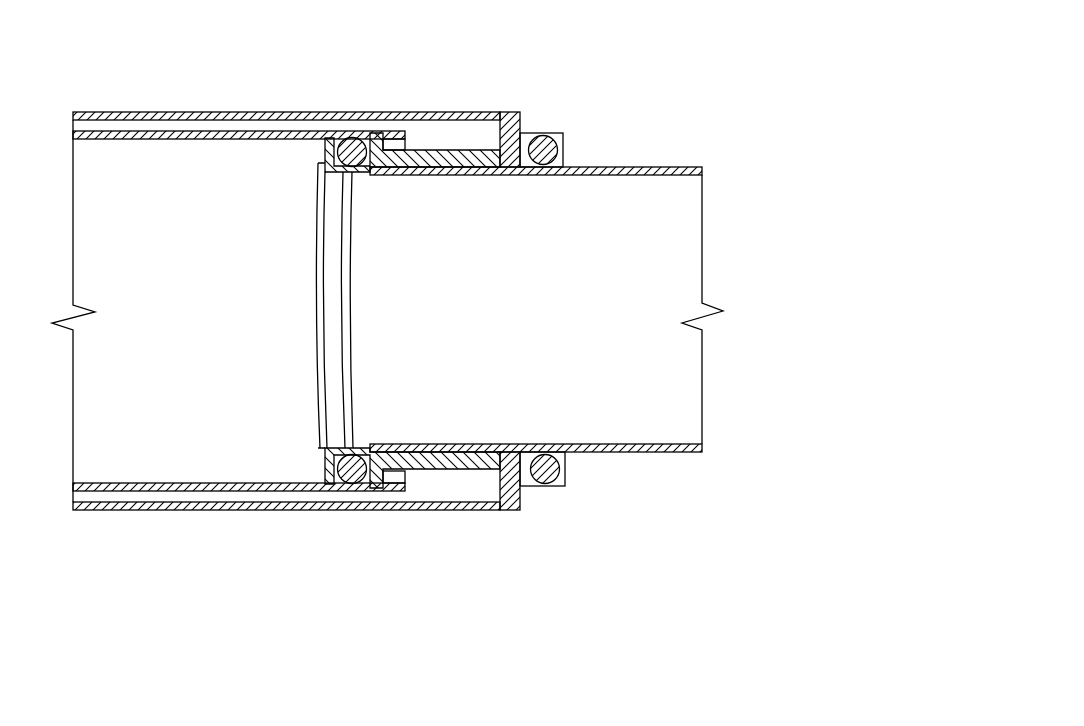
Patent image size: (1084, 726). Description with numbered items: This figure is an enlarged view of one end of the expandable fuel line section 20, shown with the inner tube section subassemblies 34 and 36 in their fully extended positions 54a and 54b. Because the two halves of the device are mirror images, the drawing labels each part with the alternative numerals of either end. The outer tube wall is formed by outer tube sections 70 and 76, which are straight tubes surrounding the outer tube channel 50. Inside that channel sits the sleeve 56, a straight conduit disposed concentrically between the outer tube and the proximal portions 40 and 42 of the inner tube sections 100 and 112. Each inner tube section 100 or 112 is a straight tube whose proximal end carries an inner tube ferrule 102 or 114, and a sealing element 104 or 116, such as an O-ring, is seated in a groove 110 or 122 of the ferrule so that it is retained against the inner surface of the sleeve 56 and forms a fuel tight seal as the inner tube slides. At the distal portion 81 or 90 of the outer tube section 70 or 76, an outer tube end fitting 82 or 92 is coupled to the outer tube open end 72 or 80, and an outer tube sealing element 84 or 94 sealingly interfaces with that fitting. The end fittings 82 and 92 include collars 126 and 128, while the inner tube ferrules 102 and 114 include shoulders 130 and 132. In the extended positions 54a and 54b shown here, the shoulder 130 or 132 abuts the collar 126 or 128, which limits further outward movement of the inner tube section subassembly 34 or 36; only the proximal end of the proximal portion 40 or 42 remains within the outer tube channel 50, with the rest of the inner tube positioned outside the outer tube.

The expandable fuel line section 20 is at (150, 55).
The outer tube channel 50 is at (227, 150).
The sleeve 56 is at (290, 134).
The shoulder 130 is at (397, 307).
The shoulder 132 is at (492, 152).
The inner tube section subassembly 34 is at (647, 82).
The inner tube section subassembly 36 is at (698, 133).
The inner tube section 100 is at (598, 277).
The inner tube section 112 is at (598, 277).
The extended position 54a is at (722, 323).
The extended position 54b is at (760, 83).
The outer tube open end 72 is at (559, 366).
The outer tube open end 80 is at (505, 513).
The outer tube section 70 is at (286, 563).
The outer tube section 76 is at (286, 563).
The distal portion 81 is at (286, 563).
The distal portion 90 is at (300, 509).
The outer tube end fitting 82 is at (634, 343).
The outer tube end fitting 92 is at (563, 457).
The outer tube sealing element 84 is at (634, 343).
The outer tube sealing element 94 is at (634, 343).
The collar 126 is at (641, 311).
The collar 128 is at (527, 133).
The proximal portion 40 is at (465, 310).
The proximal portion 42 is at (465, 310).
The inner tube ferrule 102 is at (465, 310).
The inner tube ferrule 114 is at (452, 175).
The groove 110 is at (415, 311).
The groove 122 is at (404, 470).
The sealing element 104 is at (250, 309).
The sealing element 116 is at (340, 455).